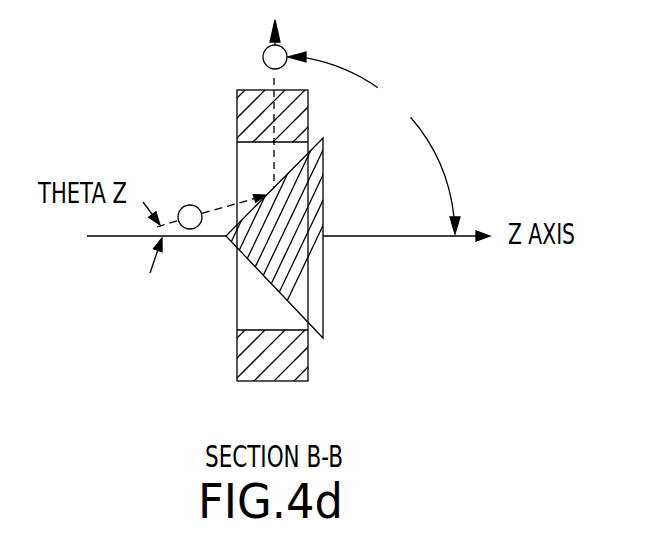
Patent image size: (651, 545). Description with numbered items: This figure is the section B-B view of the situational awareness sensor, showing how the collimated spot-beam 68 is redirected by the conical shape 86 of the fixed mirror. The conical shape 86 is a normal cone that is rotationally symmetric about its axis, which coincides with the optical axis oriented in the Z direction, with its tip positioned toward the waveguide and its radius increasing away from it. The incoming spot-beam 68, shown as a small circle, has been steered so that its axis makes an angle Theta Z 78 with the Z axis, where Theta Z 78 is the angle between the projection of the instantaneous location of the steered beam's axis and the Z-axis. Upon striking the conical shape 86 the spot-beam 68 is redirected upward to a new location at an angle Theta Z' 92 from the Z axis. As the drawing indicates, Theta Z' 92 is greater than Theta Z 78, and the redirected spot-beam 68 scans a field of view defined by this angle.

The collimated spot-beam 68 is at (263, 57).
The Theta Z 78 is at (139, 231).
The conical shape 86 is at (251, 283).
The Theta Z' 92 is at (427, 143).